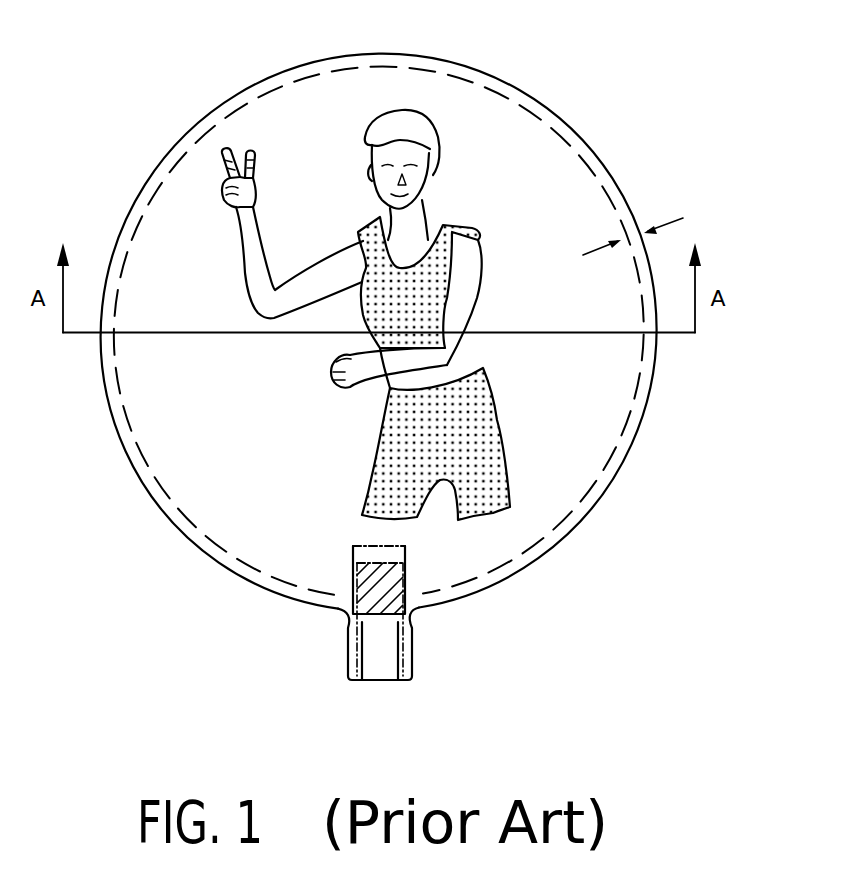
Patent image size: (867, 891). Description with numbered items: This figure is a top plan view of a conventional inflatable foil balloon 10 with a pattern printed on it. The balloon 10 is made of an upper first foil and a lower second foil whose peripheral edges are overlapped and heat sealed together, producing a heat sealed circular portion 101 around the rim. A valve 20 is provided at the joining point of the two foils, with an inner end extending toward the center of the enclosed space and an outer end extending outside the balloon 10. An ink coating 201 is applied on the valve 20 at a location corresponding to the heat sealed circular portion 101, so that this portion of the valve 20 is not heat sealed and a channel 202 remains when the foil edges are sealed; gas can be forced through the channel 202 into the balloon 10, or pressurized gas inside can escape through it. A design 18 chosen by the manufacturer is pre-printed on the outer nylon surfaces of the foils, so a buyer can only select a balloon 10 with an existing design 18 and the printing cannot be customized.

The inflatable foil balloon 10 is at (562, 110).
The heat sealed circular portion 101 is at (632, 213).
The design 18 is at (245, 237).
The valve 20 is at (392, 638).
The ink coating 201 is at (351, 607).
The channel 202 is at (380, 664).